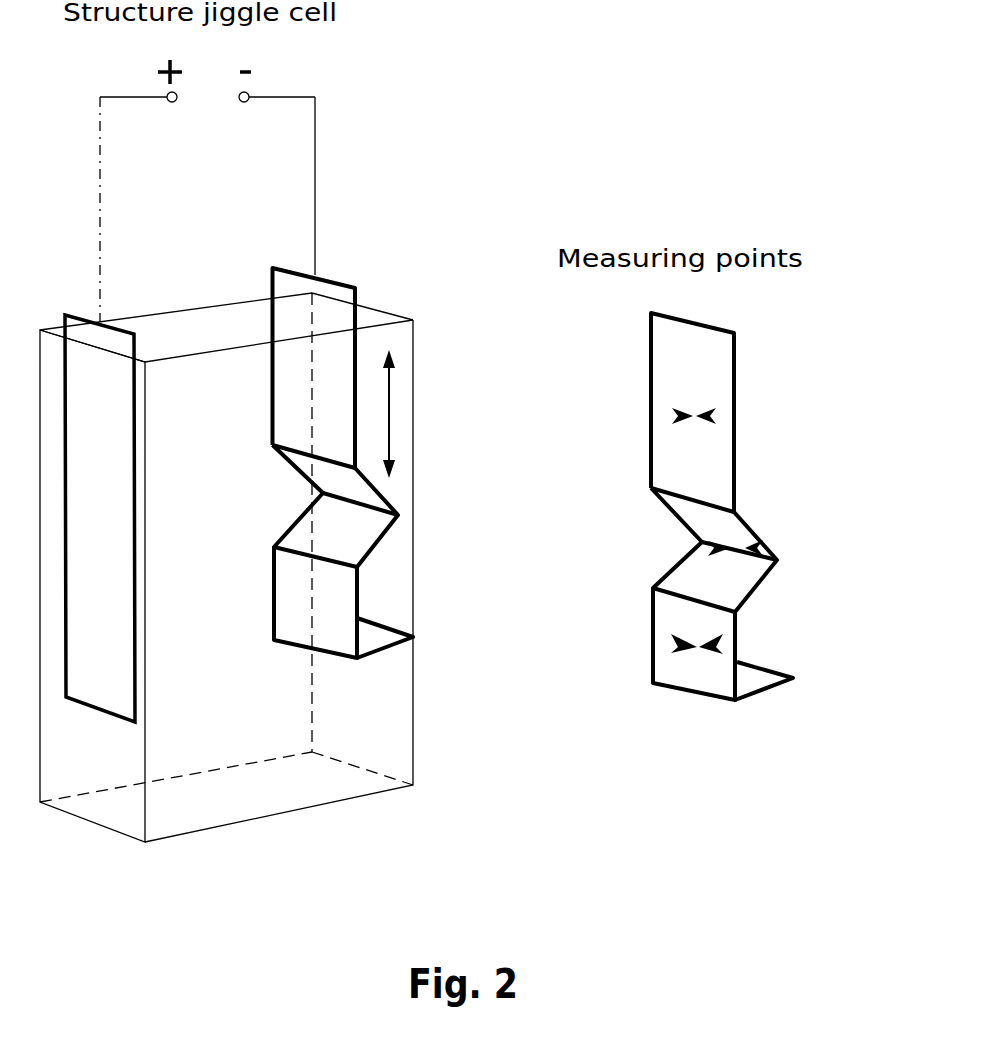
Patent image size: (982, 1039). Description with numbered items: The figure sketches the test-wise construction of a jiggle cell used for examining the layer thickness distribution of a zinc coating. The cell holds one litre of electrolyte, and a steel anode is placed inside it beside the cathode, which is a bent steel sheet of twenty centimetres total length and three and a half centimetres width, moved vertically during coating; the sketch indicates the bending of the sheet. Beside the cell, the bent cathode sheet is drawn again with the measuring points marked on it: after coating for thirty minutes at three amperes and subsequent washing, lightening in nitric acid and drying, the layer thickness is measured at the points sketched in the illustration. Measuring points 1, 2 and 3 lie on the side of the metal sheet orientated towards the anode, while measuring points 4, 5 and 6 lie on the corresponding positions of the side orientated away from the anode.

The measuring point 1 (upper panel, front) 1 is at (674, 414).
The measuring point 2 (middle fold, front) 2 is at (710, 547).
The measuring point 3 (lower panel, front) 3 is at (672, 644).
The measuring point 4 (upper panel, back) 4 is at (714, 413).
The measuring point 5 (middle fold, back) 5 is at (760, 548).
The measuring point 6 (lower panel, back) 6 is at (724, 645).